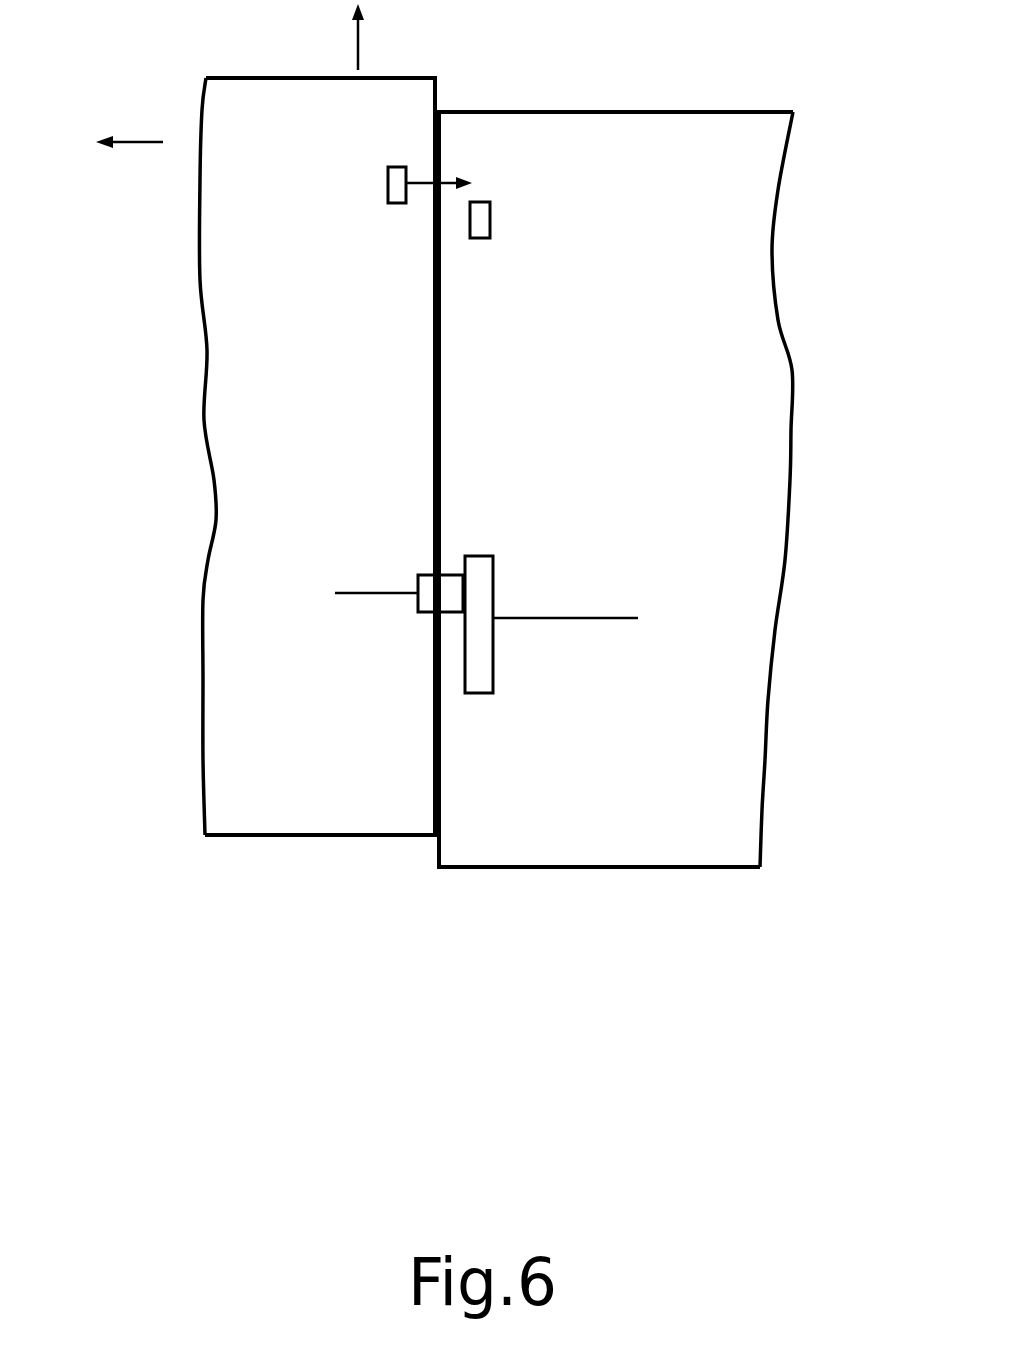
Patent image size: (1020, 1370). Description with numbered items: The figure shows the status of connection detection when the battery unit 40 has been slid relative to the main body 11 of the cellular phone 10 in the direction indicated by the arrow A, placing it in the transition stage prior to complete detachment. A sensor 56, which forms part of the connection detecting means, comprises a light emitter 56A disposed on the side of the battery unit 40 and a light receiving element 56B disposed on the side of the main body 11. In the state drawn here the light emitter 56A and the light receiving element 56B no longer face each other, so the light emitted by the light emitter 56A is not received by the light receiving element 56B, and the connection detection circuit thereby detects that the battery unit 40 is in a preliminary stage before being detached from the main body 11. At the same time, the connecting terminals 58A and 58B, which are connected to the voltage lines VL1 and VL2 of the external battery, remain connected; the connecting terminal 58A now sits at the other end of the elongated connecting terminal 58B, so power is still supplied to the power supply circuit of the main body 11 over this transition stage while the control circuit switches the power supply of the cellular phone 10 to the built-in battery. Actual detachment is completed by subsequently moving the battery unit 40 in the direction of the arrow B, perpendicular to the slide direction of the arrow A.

The cellular phone 10 is at (636, 895).
The main body 11 is at (530, 868).
The battery unit 40 is at (337, 845).
The sensor 56 is at (463, 244).
The light emitter 56A is at (395, 205).
The light receiving element 56B is at (482, 198).
The connecting terminal 58A is at (427, 573).
The connecting terminal 58B is at (483, 555).
The voltage line VL1 is at (372, 593).
The voltage line VL2 is at (583, 618).
The arrow A is at (360, 48).
The arrow B is at (143, 142).